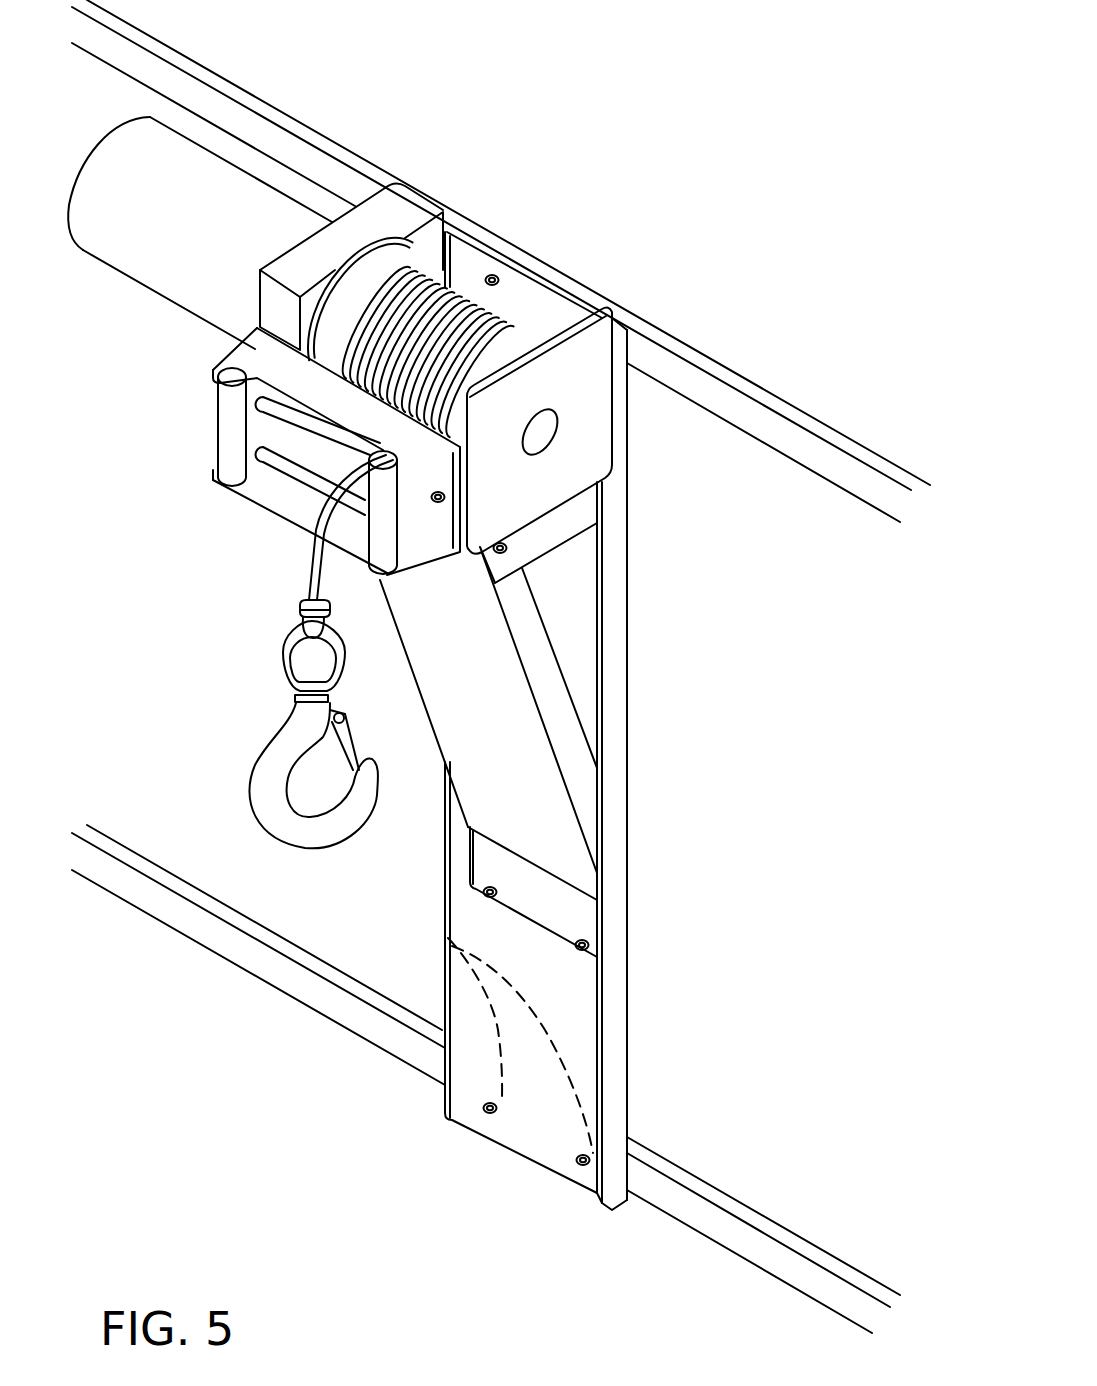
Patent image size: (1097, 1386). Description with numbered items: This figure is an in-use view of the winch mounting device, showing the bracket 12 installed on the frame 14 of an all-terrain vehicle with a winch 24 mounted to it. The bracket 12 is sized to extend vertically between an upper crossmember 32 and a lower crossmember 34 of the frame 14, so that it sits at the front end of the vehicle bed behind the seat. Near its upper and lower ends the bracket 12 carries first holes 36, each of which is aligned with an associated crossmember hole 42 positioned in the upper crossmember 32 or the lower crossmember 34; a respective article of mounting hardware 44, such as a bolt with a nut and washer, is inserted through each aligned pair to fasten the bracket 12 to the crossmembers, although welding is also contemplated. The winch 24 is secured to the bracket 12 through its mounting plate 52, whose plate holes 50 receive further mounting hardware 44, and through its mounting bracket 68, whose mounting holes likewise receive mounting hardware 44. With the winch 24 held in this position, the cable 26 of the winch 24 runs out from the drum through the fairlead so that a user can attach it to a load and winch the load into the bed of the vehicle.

The bracket 12 is at (617, 505).
The frame 14 is at (668, 1158).
The winch 24 is at (387, 220).
The cable 26 is at (305, 560).
The upper crossmember 32 is at (217, 77).
The lower crossmember 34 is at (772, 1228).
The first hole 36 is at (586, 1160).
The crossmember hole 42 is at (450, 946).
The mounting hardware 44 is at (487, 1112).
The plate hole 50 is at (508, 512).
The mounting plate 52 is at (545, 490).
The mounting bracket 68 is at (442, 517).